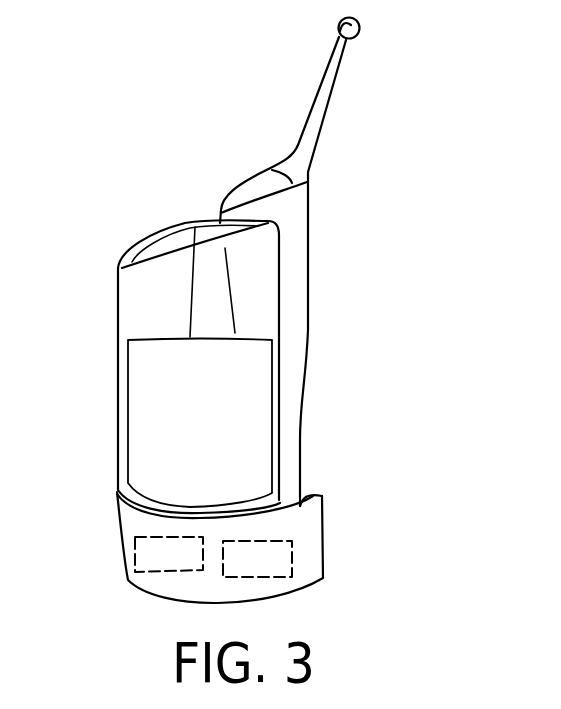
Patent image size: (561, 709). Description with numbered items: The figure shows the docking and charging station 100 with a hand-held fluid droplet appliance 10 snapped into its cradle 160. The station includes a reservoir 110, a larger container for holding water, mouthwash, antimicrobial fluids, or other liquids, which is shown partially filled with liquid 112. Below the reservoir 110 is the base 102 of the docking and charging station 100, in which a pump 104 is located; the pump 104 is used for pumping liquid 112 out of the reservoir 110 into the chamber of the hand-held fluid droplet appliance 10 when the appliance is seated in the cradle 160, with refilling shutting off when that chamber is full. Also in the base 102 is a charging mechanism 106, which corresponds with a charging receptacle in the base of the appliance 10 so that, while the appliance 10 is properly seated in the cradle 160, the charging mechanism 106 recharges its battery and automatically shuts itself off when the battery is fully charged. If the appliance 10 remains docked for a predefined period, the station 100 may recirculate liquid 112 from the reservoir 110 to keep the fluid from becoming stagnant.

The docking and charging station 100 is at (99, 205).
The hand-held fluid droplet appliance 10 is at (318, 185).
The cradle 160 is at (300, 273).
The reservoir 110 is at (118, 290).
The liquid 112 is at (133, 430).
The base 102 is at (307, 540).
The pump 104 is at (290, 563).
The charging mechanism 106 is at (135, 557).